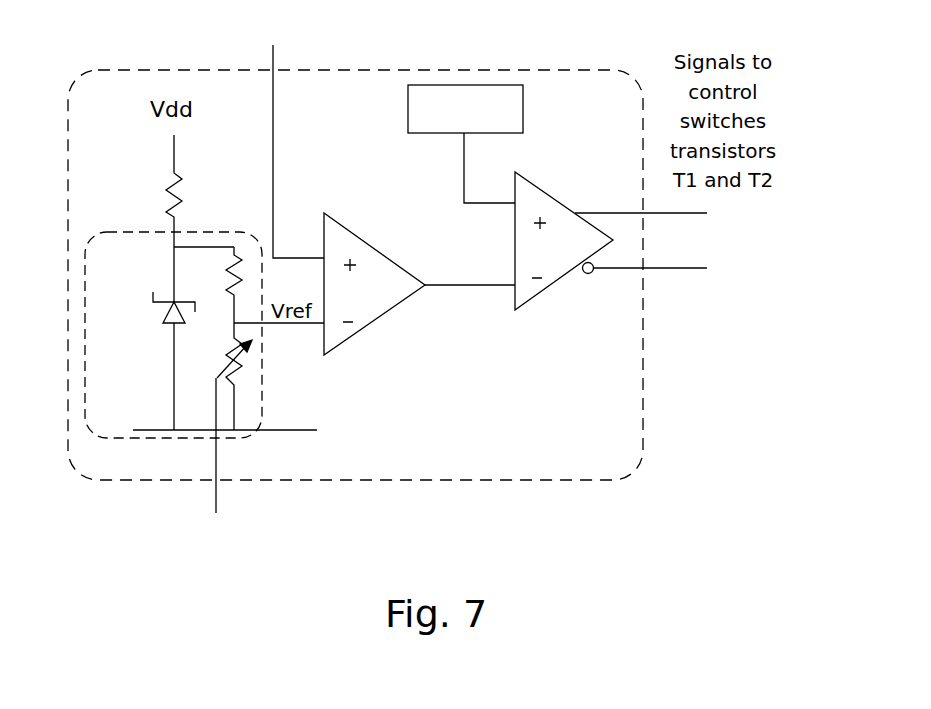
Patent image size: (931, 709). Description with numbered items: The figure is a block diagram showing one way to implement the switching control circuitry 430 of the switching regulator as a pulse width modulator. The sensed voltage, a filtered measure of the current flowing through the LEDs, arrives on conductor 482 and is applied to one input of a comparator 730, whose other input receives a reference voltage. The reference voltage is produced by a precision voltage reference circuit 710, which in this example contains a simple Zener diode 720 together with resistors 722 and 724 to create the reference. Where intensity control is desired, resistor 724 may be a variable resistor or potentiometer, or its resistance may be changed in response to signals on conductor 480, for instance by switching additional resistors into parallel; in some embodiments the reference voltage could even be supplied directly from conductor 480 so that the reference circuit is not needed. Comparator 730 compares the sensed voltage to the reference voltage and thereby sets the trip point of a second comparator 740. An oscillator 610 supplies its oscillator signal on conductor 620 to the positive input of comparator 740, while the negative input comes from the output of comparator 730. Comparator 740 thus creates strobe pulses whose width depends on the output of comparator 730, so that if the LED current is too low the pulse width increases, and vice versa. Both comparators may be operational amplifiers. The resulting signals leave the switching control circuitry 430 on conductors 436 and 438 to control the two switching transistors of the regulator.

The switching control circuitry 430 is at (222, 70).
The conductor 482 is at (275, 137).
The voltage reference circuit 710 is at (157, 232).
The Zener diode 720 is at (173, 302).
The resistor 722 is at (226, 297).
The resistor 724 is at (236, 350).
The conductor 480 is at (217, 490).
The comparator 730 is at (340, 222).
The oscillator 610 is at (523, 97).
The conductor 620 is at (462, 177).
The comparator 740 is at (540, 188).
The conductor 436 is at (662, 213).
The conductor 438 is at (667, 268).